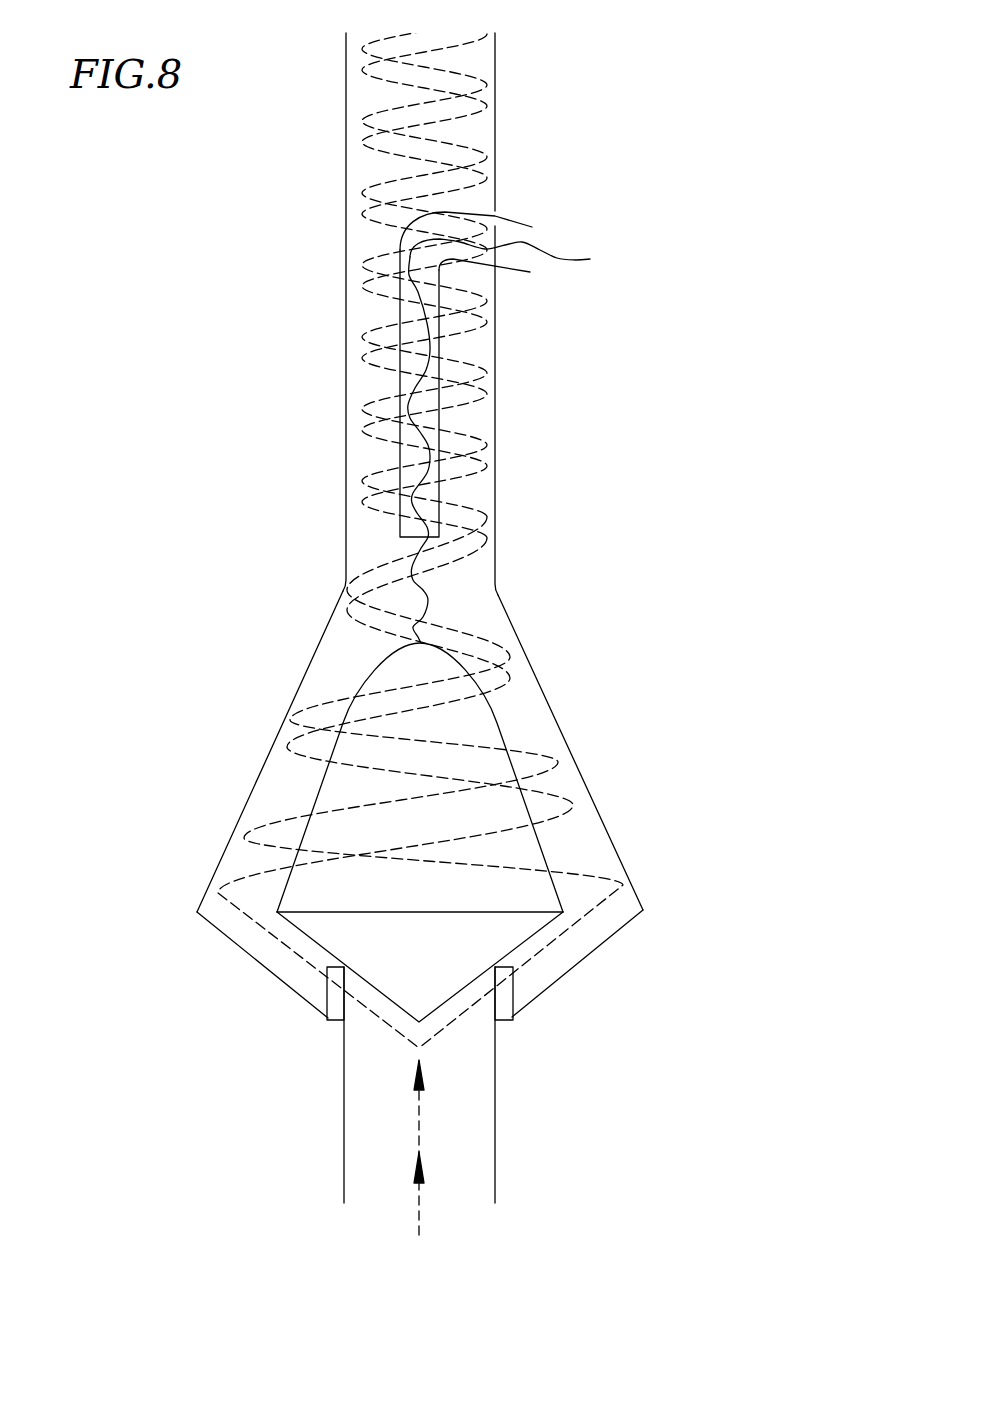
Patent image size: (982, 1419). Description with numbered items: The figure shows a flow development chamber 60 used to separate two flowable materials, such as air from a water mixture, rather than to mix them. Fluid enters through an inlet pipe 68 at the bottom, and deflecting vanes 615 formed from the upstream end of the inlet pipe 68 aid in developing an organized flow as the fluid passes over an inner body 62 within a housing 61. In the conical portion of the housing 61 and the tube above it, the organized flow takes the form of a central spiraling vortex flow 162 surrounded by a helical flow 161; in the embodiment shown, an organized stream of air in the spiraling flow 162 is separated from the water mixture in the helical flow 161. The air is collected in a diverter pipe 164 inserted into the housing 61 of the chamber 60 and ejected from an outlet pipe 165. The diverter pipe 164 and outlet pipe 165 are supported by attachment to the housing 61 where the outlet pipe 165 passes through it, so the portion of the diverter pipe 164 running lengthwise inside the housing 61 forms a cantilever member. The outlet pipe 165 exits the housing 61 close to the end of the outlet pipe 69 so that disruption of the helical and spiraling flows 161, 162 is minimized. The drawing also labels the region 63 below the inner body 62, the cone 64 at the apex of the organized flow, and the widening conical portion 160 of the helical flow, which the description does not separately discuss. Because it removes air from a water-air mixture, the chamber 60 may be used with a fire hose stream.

The flow development chamber 60 is at (598, 578).
The housing 61 is at (612, 838).
The inner body 62 is at (519, 721).
The inlet cone 63 is at (478, 935).
The deflector cone 64 is at (390, 680).
The inlet pipe 68 is at (497, 1144).
The outlet pipe 69 is at (346, 414).
The conical helical coil section 160 is at (243, 824).
The helical flow 161 is at (363, 339).
The spiraling vortex flow 162 is at (440, 453).
The diverter pipe 164 is at (440, 334).
The outlet pipe 165 is at (523, 223).
The deflecting vanes 615 is at (335, 1022).